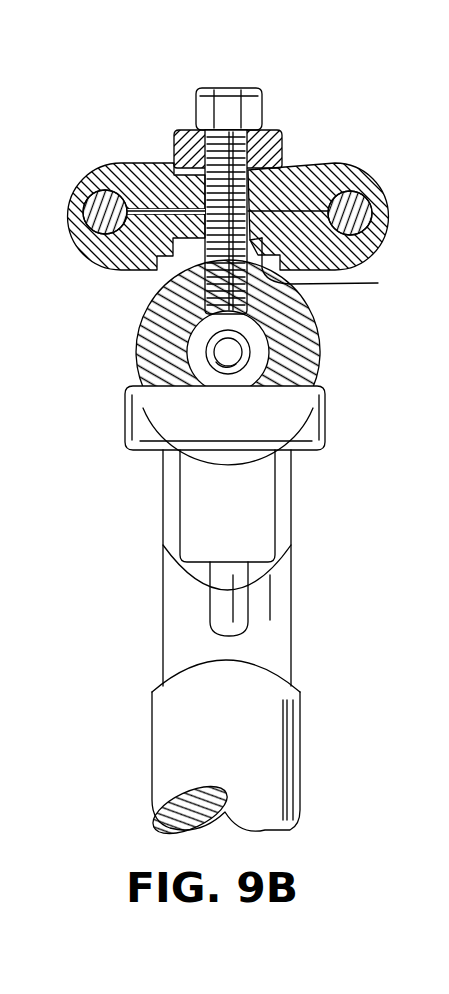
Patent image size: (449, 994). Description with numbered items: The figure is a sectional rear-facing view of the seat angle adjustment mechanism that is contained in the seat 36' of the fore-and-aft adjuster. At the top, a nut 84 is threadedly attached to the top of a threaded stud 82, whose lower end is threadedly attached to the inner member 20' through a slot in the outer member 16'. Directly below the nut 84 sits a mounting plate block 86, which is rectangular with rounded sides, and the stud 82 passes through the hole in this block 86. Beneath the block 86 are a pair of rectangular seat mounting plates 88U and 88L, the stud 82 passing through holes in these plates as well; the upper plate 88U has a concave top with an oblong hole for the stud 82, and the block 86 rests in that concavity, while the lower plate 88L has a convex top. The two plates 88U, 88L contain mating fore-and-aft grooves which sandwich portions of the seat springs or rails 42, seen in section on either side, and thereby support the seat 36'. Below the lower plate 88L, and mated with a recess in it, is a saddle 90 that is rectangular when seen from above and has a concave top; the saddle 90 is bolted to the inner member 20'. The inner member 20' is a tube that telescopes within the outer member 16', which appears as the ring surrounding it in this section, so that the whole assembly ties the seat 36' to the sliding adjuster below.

The nut 84 is at (258, 102).
The threaded stud 82 is at (273, 137).
The mounting plate block 86 is at (282, 146).
The seat 36' is at (286, 444).
The upper seat mounting plate 88U is at (383, 186).
The seat springs or rails 42 is at (383, 210).
The lower seat mounting plate 88L is at (382, 240).
The saddle 90 is at (332, 275).
The outer member 16' is at (277, 352).
The inner member 20' is at (310, 356).